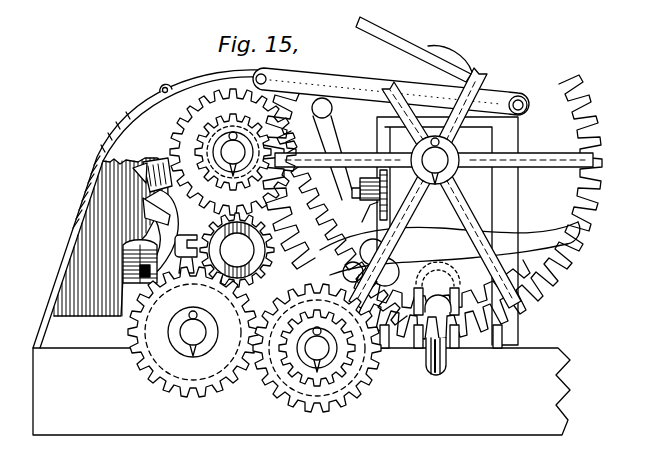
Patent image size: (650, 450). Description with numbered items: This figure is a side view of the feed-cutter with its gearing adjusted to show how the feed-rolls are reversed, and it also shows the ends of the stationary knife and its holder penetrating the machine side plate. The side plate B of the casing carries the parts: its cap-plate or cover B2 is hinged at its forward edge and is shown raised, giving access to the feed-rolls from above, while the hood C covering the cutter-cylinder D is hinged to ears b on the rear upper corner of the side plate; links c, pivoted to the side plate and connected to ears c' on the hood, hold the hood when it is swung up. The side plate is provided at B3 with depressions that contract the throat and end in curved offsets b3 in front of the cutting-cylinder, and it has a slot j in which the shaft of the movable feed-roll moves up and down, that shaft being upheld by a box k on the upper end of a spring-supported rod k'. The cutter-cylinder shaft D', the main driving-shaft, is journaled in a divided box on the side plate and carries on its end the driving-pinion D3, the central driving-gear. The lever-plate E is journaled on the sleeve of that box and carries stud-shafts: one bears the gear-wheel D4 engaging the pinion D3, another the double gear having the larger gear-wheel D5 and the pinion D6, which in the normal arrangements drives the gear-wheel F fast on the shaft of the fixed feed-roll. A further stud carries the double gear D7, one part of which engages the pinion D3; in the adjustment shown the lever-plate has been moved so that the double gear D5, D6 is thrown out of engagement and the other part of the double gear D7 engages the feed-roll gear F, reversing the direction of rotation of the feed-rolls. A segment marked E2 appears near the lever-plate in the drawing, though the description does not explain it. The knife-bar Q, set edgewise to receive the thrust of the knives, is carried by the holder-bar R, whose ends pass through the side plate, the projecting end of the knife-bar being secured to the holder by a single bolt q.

The cutter-cylinder D is at (301, 378).
The hood C is at (113, 148).
The ears on the hood c' is at (160, 85).
The gear-wheel F is at (432, 207).
The lever-plate E is at (341, 228).
The toothed segment E2 is at (442, 285).
The side plate B is at (433, 231).
The depressions in side plates B3 is at (450, 254).
The slot j is at (460, 290).
The box k is at (423, 357).
The rod k' is at (424, 369).
The link c is at (391, 88).
The ears b is at (332, 149).
The cap-plate or cover B2 is at (414, 49).
The knife-bar Q is at (359, 190).
The bolt q is at (352, 196).
The holder-bar R is at (383, 180).
The curved offsets b3 is at (362, 222).
The double gear D7 is at (185, 183).
The shaft D' is at (237, 250).
The driving-pinion D3 is at (186, 247).
The gear-wheel D4 is at (193, 332).
The gear-wheel D5 is at (317, 348).
The pinion D6 is at (317, 354).